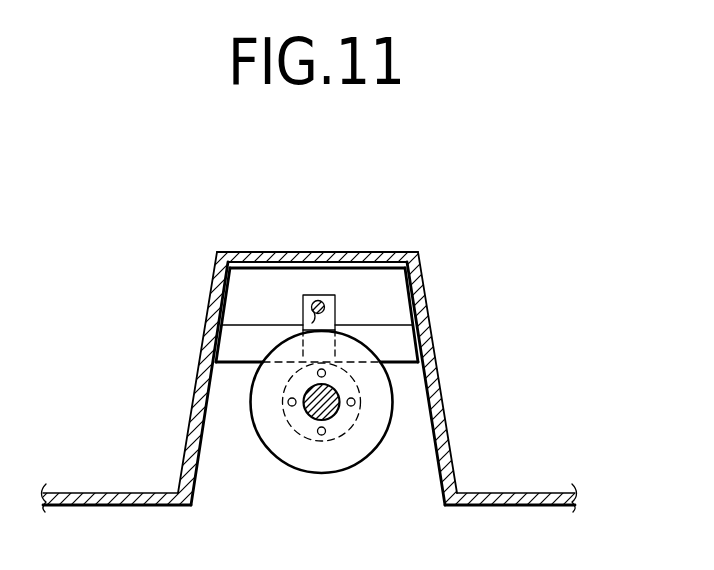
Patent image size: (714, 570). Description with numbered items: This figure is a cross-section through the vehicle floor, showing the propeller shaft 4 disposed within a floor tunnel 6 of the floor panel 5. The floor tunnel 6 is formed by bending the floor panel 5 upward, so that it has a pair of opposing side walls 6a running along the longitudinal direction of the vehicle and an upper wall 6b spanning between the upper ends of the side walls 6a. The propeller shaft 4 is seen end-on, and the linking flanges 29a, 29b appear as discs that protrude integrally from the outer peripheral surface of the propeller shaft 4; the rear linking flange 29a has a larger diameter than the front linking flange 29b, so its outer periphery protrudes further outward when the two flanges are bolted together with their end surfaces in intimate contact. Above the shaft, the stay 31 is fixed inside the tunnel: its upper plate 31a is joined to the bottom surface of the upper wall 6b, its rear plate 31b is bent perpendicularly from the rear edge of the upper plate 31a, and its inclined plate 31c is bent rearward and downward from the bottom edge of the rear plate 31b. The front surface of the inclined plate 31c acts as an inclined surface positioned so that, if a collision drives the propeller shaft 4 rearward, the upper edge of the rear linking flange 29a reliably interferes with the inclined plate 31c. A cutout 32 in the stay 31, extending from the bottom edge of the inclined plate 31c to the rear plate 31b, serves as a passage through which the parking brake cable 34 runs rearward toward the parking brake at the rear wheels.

The propeller shaft 4 is at (303, 410).
The floor panel 5 is at (556, 492).
The floor tunnel 6 is at (298, 240).
The side wall 6a is at (197, 377).
The upper wall 6b is at (385, 250).
The rear linking flange 29a is at (296, 473).
The front linking flange 29b is at (345, 432).
The stay 31 is at (250, 278).
The upper plate 31a is at (392, 270).
The rear plate 31b is at (411, 327).
The inclined plate 31c is at (418, 363).
The cutout 32 is at (303, 307).
The parking brake cable 34 is at (321, 300).